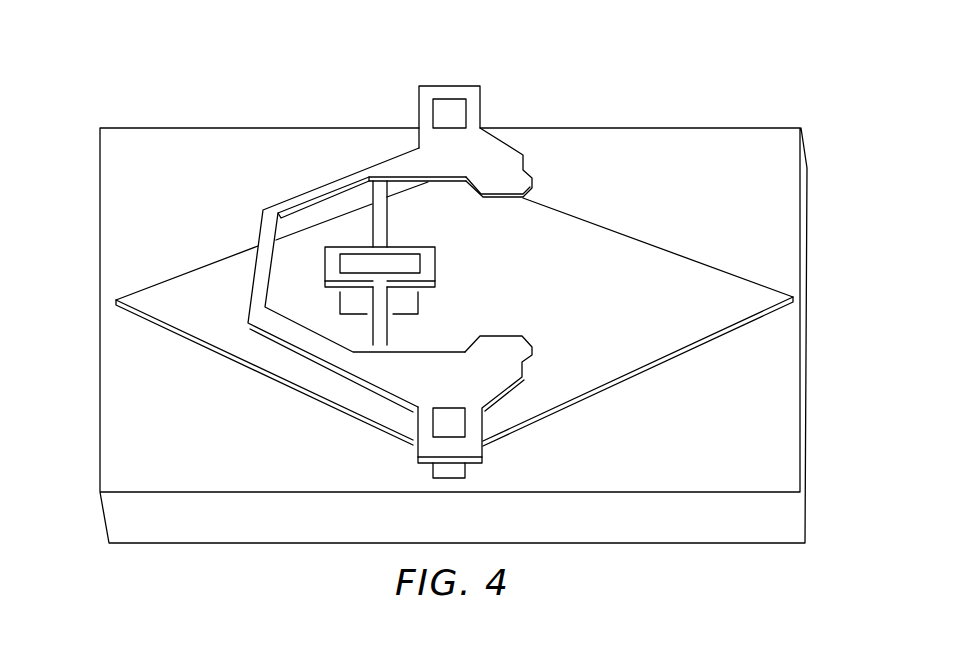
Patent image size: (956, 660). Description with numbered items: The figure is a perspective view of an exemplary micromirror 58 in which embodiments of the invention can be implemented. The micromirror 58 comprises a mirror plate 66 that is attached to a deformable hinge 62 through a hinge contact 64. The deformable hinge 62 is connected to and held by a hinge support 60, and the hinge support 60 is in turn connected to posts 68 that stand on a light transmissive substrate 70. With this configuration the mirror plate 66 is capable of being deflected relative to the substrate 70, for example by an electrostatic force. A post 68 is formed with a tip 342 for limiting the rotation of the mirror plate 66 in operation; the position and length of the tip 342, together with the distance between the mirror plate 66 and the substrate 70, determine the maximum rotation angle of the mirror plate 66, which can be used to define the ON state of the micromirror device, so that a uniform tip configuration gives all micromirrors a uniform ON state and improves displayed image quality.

The micromirror 58 is at (638, 89).
The hinge support 60 is at (262, 229).
The deformable hinge 62 is at (388, 227).
The hinge contact 64 is at (418, 298).
The mirror plate 66 is at (652, 252).
The posts 68 is at (419, 104).
The light transmissive substrate 70 is at (237, 128).
The tip 342 is at (532, 343).